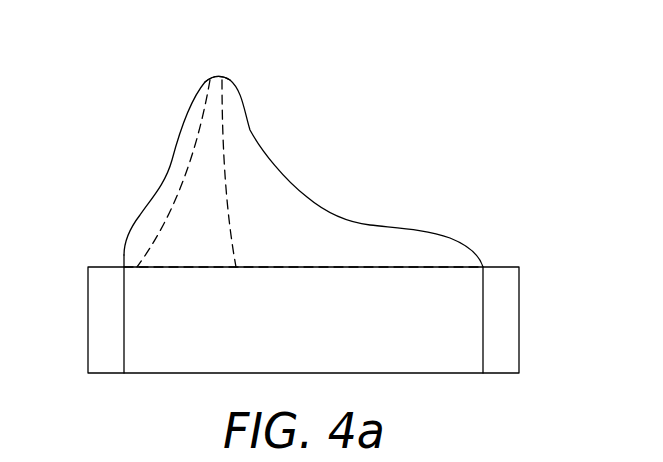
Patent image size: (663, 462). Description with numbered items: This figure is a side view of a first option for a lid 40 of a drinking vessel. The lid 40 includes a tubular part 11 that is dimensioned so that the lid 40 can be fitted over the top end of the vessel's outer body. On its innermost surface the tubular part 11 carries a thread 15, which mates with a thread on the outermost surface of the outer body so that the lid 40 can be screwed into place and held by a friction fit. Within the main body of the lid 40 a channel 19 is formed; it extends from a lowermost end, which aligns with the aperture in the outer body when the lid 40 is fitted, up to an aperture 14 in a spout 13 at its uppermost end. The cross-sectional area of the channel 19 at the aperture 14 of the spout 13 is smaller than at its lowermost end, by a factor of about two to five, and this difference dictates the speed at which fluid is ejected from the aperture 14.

The tubular part 11 is at (520, 285).
The spout 13 is at (248, 123).
The aperture 14 is at (215, 78).
The thread 15 is at (123, 285).
The channel 19 is at (187, 208).
The lid 40 is at (145, 135).